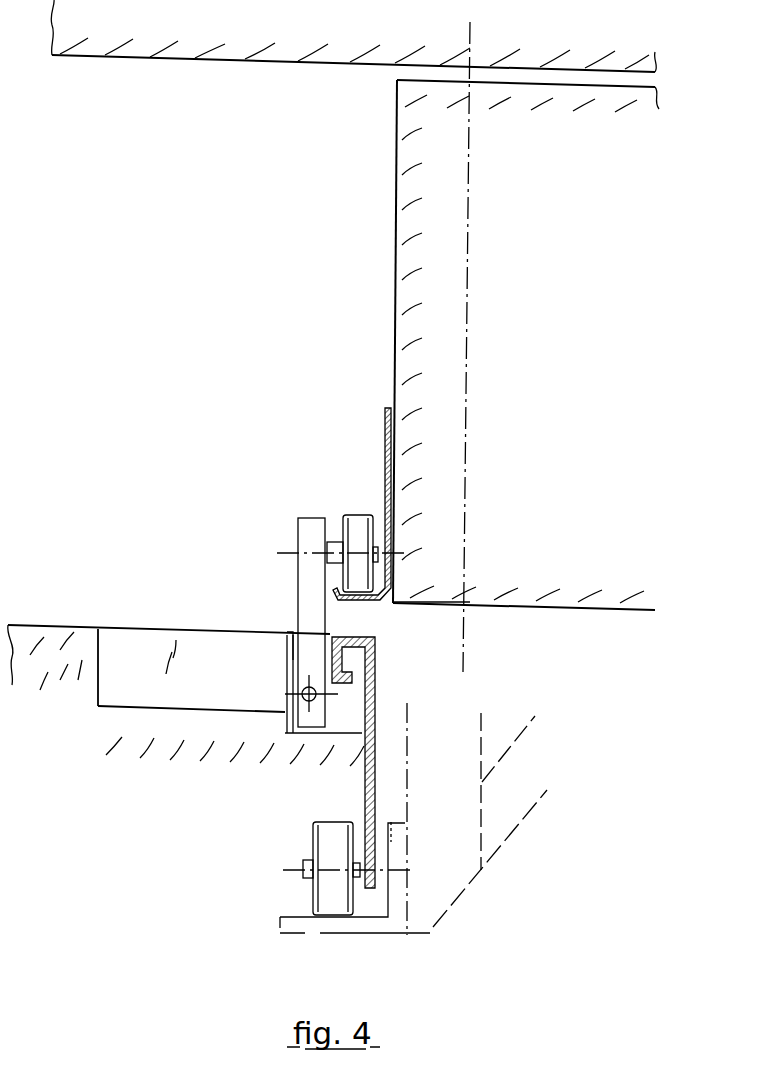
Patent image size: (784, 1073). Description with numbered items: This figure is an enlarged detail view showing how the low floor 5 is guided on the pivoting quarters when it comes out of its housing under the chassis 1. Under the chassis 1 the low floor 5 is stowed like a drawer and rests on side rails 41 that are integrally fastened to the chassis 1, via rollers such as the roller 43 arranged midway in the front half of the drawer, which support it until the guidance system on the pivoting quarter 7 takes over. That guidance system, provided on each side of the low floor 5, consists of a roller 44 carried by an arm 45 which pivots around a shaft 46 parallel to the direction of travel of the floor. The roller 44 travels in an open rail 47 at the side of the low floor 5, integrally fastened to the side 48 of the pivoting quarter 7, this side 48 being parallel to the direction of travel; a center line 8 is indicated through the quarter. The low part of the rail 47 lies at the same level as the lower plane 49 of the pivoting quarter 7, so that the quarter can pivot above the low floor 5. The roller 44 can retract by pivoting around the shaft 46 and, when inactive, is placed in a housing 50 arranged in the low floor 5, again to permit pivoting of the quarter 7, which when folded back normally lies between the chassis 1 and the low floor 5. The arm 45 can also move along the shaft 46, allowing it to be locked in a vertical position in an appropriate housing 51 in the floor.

The chassis 1 is at (292, 31).
The low floor 5 is at (41, 625).
The pivoting quarter 7 is at (556, 226).
The centre line of partition wall 8 is at (463, 649).
The side rail 41 is at (353, 935).
The roller 43 is at (313, 825).
The roller 44 is at (350, 515).
The arm 45 is at (300, 520).
The shaft 46 is at (302, 689).
The open rail 47 is at (385, 426).
The side of the pivoting quarter 48 is at (395, 251).
The lower plane of the pivoting quarter 49 is at (575, 610).
The housing 50 is at (150, 684).
The housing 51 is at (293, 633).